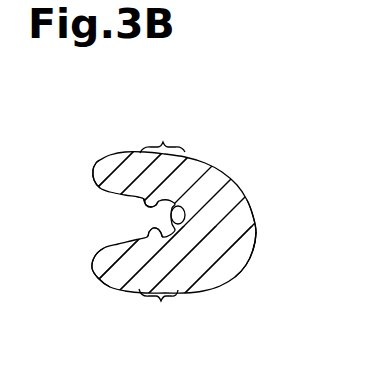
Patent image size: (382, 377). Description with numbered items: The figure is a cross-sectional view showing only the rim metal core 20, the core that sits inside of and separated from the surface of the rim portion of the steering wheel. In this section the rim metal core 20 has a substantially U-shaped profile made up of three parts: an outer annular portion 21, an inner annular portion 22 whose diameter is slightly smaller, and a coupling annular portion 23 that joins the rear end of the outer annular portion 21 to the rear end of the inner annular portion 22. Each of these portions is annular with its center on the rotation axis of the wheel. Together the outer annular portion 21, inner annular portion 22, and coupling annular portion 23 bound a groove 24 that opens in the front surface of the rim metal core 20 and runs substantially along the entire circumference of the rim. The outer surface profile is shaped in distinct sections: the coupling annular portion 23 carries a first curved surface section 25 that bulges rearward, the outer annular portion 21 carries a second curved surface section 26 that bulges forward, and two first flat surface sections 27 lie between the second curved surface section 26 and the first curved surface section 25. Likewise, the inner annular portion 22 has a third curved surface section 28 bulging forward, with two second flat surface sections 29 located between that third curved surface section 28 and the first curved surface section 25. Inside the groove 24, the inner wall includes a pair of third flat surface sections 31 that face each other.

The rim metal core 20 is at (247, 188).
The outer annular portion 21 is at (121, 172).
The inner annular portion 22 is at (118, 278).
The coupling annular portion 23 is at (255, 220).
The groove 24 is at (209, 230).
The first curved surface section 25 is at (253, 228).
The second curved surface section 26 is at (92, 175).
The first flat surface sections 27 is at (163, 142).
The third curved surface section 28 is at (92, 268).
The second flat surface sections 29 is at (161, 301).
The third flat surface sections 31 is at (154, 198).